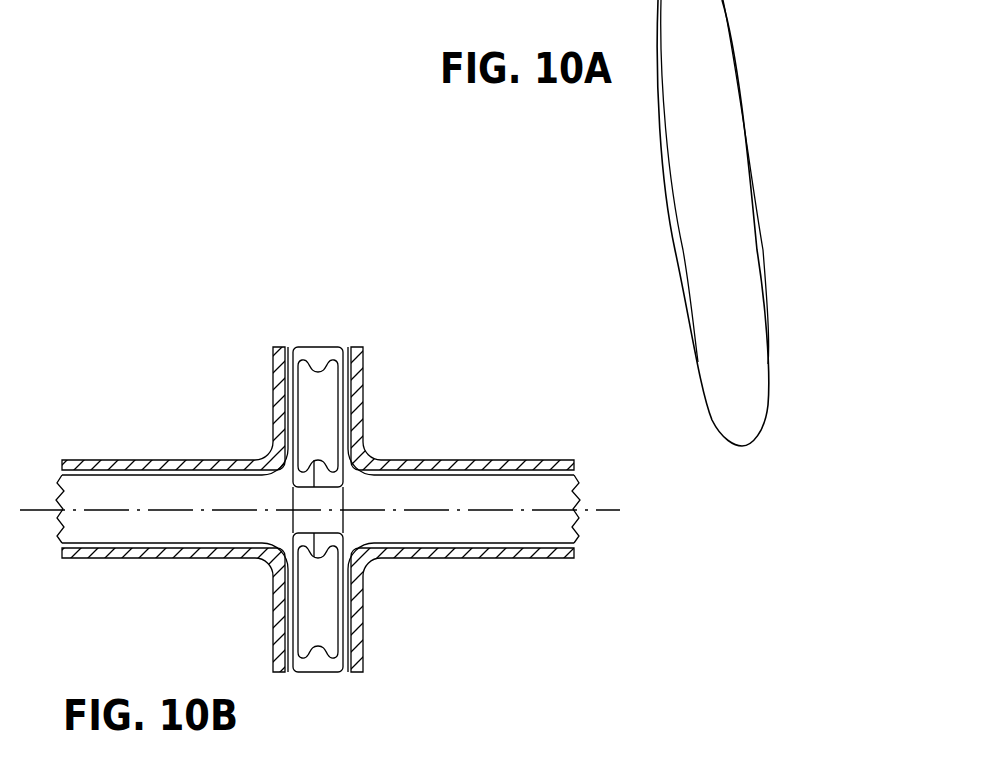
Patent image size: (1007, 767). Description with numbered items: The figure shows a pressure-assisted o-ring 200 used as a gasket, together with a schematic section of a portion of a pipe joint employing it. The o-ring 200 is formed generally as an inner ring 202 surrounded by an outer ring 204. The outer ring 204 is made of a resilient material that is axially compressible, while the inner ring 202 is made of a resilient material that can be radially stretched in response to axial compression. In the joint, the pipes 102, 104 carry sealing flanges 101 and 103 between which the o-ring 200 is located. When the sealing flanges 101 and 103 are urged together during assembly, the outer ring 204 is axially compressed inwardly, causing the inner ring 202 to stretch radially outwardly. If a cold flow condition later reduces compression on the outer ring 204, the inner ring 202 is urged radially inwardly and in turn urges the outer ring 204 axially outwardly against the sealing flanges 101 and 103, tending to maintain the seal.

In FIG. 10A, the pressure-assisted o-ring 200 is at (771, 66).
In FIG. 10B, the pressure-assisted o-ring 200 is at (332, 478).
In FIG. 10B, the inner ring 202 is at (337, 383).
In FIG. 10B, the outer ring 204 is at (318, 347).
In FIG. 10B, the sealing flange 101 is at (273, 404).
In FIG. 10B, the pipe 102 is at (97, 460).
In FIG. 10B, the sealing flange 103 is at (363, 425).
In FIG. 10B, the pipe 104 is at (520, 460).